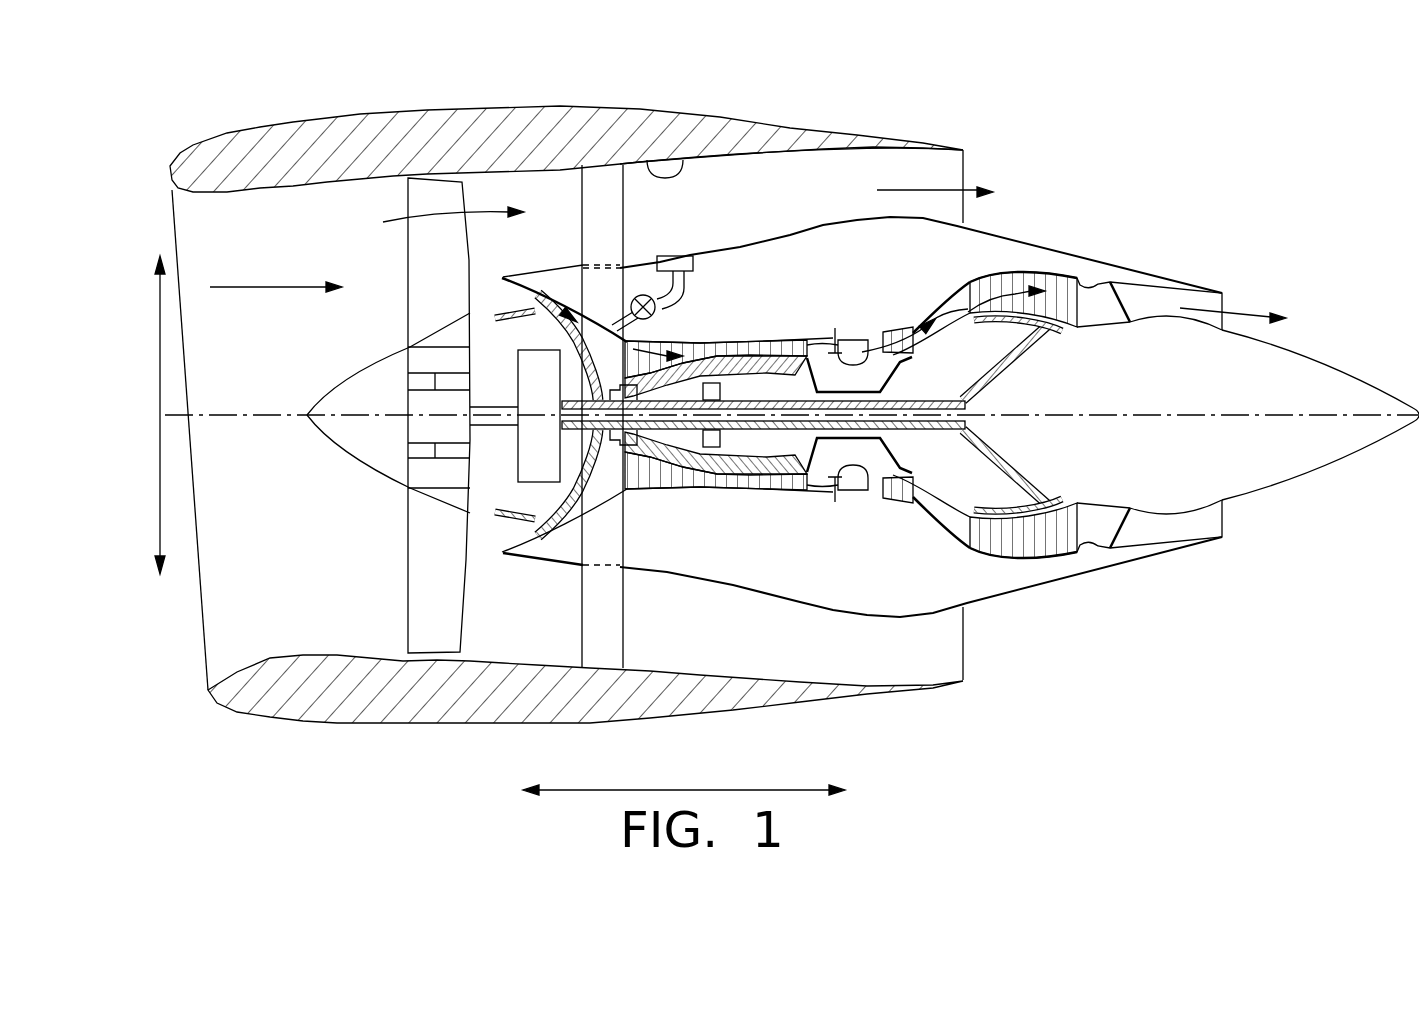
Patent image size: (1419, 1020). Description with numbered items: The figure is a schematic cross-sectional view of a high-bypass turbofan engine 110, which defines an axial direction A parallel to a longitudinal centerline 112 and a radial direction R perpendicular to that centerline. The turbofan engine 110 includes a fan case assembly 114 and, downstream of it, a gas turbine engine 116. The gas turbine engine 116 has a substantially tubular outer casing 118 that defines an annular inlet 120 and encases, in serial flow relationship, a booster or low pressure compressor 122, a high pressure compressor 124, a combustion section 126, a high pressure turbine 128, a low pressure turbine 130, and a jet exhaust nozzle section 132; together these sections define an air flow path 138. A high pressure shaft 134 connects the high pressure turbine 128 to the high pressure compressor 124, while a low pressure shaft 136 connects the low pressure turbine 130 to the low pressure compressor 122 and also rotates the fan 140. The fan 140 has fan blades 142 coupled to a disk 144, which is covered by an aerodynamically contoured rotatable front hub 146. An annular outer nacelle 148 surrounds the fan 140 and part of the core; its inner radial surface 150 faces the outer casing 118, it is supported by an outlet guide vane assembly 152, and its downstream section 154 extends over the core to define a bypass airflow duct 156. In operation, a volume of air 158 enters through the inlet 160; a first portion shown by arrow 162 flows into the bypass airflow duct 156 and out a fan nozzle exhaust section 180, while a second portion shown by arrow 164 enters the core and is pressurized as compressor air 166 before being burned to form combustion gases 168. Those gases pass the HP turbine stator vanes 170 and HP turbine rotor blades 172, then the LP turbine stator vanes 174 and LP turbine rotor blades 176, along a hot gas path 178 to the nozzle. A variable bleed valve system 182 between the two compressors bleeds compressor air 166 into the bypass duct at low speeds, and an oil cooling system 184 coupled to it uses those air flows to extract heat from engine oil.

The turbofan engine 110 is at (1140, 130).
The longitudinal centerline 112 is at (1158, 415).
The fan case assembly 114 is at (310, 200).
The gas turbine engine 116 is at (799, 297).
The outer casing 118 is at (807, 603).
The annular inlet 120 is at (503, 540).
The low pressure compressor 122 is at (566, 552).
The high pressure compressor 124 is at (659, 500).
The combustion section 126 is at (848, 510).
The high pressure turbine 128 is at (936, 495).
The low pressure turbine 130 is at (1070, 580).
The jet exhaust nozzle section 132 is at (1135, 556).
The high pressure shaft 134 is at (888, 382).
The low pressure shaft 136 is at (940, 399).
The air flow path 138 is at (601, 522).
The fan 140 is at (352, 475).
The fan blades 142 is at (407, 588).
The disk 144 is at (427, 358).
The front hub 146 is at (323, 432).
The nacelle 148 is at (457, 723).
The inner radial surface 150 is at (688, 158).
The outlet guide vane assembly 152 is at (622, 212).
The downstream section 154 is at (862, 145).
The bypass airflow duct 156 is at (773, 200).
The air 158 is at (268, 287).
The inlet 160 is at (202, 666).
The fan stream air flow 162 is at (423, 224).
The second portion of air 164 is at (520, 292).
The compressor air 166 is at (541, 322).
The combustion gases 168 is at (1017, 272).
The HP turbine stator vanes 170 is at (872, 500).
The HP turbine rotor blades 172 is at (888, 478).
The LP turbine stator vanes 174 is at (982, 547).
The LP turbine rotor blades 176 is at (982, 558).
The hot gas path 178 is at (946, 283).
The fan nozzle exhaust section 180 is at (950, 170).
The variable bleed valve system 182 is at (657, 304).
The oil cooling system 184 is at (693, 262).
The radial direction R is at (163, 392).
The axial direction A is at (685, 790).